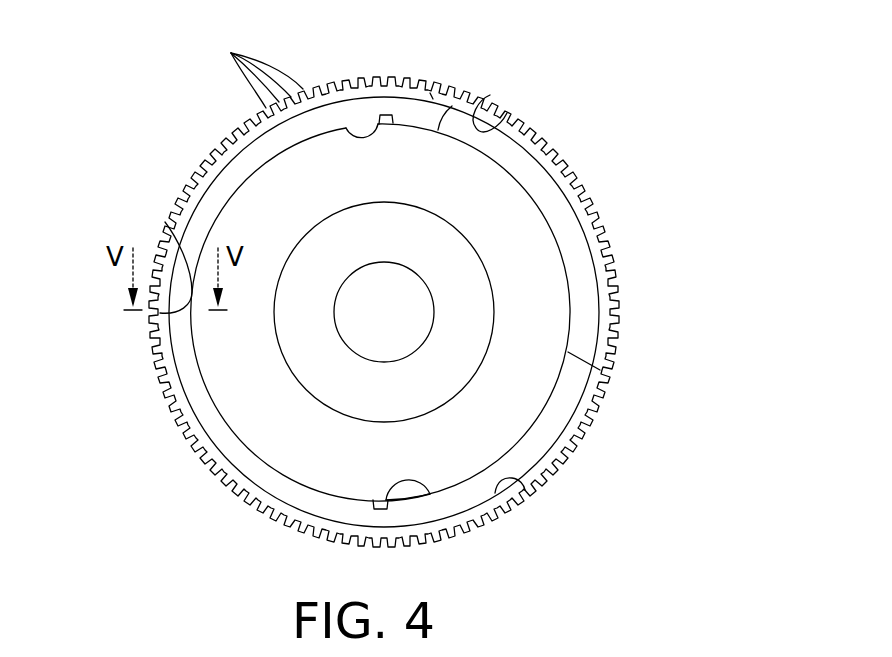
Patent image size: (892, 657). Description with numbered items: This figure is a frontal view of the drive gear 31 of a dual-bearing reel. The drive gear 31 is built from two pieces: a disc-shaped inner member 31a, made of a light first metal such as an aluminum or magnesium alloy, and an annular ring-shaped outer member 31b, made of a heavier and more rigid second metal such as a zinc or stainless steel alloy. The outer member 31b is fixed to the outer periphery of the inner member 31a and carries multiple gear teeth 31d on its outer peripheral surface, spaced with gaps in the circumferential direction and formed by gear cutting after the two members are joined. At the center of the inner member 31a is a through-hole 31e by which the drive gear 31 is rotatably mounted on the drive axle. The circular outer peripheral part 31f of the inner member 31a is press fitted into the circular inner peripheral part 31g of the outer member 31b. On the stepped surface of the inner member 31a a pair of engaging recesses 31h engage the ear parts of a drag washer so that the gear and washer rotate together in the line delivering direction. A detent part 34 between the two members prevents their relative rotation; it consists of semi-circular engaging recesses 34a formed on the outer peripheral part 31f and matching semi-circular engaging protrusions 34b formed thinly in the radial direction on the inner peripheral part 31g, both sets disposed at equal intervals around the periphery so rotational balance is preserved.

The drive gear 31 is at (398, 289).
The inner member 31a is at (583, 303).
The outer member 31b is at (612, 233).
The gear teeth 31d is at (250, 62).
The through-hole 31e is at (428, 320).
The outer peripheral part 31f is at (432, 93).
The inner peripheral part 31g is at (452, 106).
The engaging recesses 31h is at (347, 123).
The detent part 34 is at (157, 322).
The engaging recesses 34a is at (490, 95).
The engaging protrusions 34b is at (507, 113).